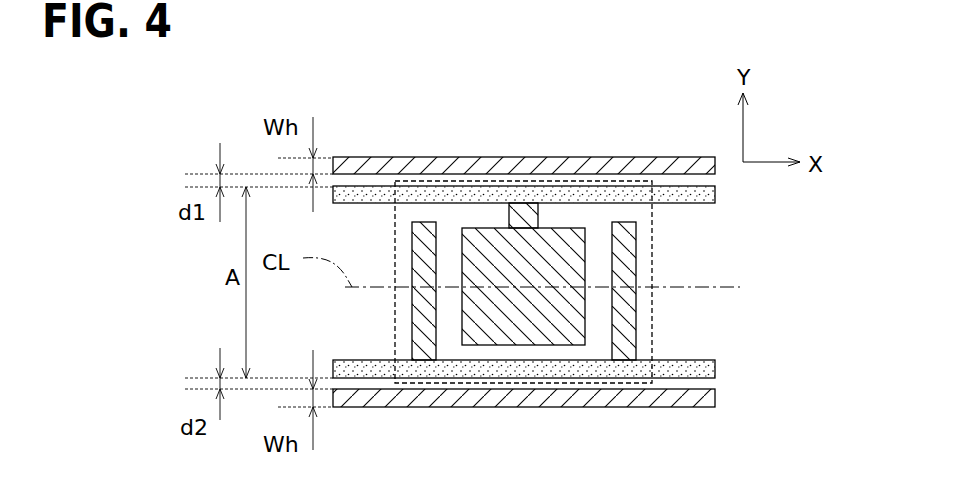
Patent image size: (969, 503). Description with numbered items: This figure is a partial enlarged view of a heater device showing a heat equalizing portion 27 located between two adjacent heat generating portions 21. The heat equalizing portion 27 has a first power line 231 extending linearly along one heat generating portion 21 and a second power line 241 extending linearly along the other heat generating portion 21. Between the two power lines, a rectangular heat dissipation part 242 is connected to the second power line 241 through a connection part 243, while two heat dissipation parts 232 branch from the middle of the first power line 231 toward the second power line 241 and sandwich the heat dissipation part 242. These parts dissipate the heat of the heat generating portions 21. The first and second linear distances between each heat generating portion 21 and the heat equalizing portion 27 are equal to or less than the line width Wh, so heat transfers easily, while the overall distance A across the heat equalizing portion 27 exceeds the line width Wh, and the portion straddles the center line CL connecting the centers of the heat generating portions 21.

The heat generating portion 21 is at (498, 157).
The heat equalizing portion 27 is at (434, 166).
The second power line 241 is at (693, 203).
The connection part 243 is at (538, 214).
The heat dissipation part 242 is at (585, 258).
The heat dissipation part 232 is at (636, 303).
The first power line 231 is at (675, 360).